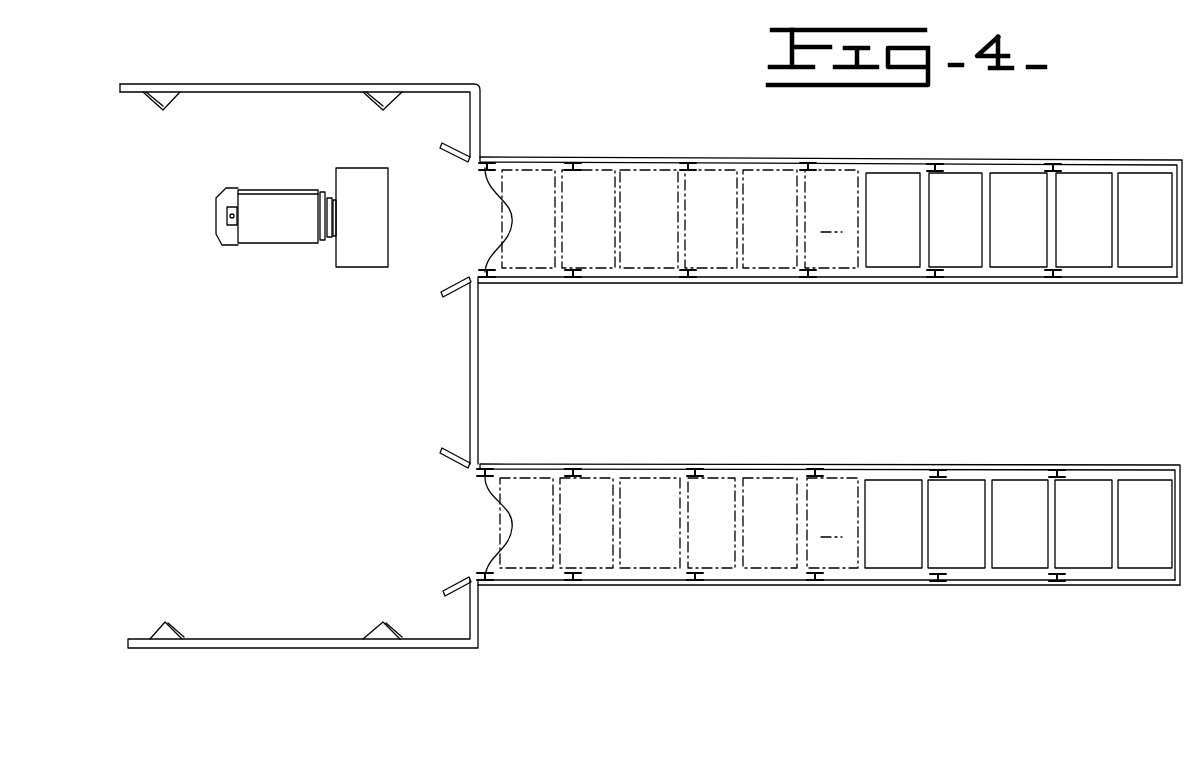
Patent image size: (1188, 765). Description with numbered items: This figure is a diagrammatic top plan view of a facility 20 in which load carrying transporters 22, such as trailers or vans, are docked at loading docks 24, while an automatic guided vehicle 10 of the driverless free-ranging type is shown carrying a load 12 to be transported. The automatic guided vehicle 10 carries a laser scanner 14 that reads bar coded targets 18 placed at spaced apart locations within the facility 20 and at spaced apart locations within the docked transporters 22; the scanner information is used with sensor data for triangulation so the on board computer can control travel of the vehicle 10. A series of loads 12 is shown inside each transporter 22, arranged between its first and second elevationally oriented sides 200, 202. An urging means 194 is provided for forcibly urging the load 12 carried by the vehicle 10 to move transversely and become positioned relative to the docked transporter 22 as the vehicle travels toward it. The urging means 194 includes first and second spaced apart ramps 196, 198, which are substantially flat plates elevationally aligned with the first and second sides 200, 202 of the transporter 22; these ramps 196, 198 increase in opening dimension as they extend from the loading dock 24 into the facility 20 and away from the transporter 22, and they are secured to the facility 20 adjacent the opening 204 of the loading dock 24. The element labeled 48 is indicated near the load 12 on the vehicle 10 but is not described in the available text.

The automatic guided vehicle 10 is at (258, 289).
The load 12 is at (349, 230).
The laser scanner 14 is at (237, 191).
The bar coded targets 18 is at (172, 103).
The facility 20 is at (507, 89).
The load carrying transporters 22 is at (826, 371).
The loading docks 24 is at (494, 291).
The coupling 48 is at (327, 256).
The urging means 194 is at (396, 291).
The first ramp 196 is at (460, 150).
The second ramp 198 is at (460, 295).
The first side 200 is at (718, 163).
The second side 202 is at (852, 278).
The opening 204 is at (444, 174).